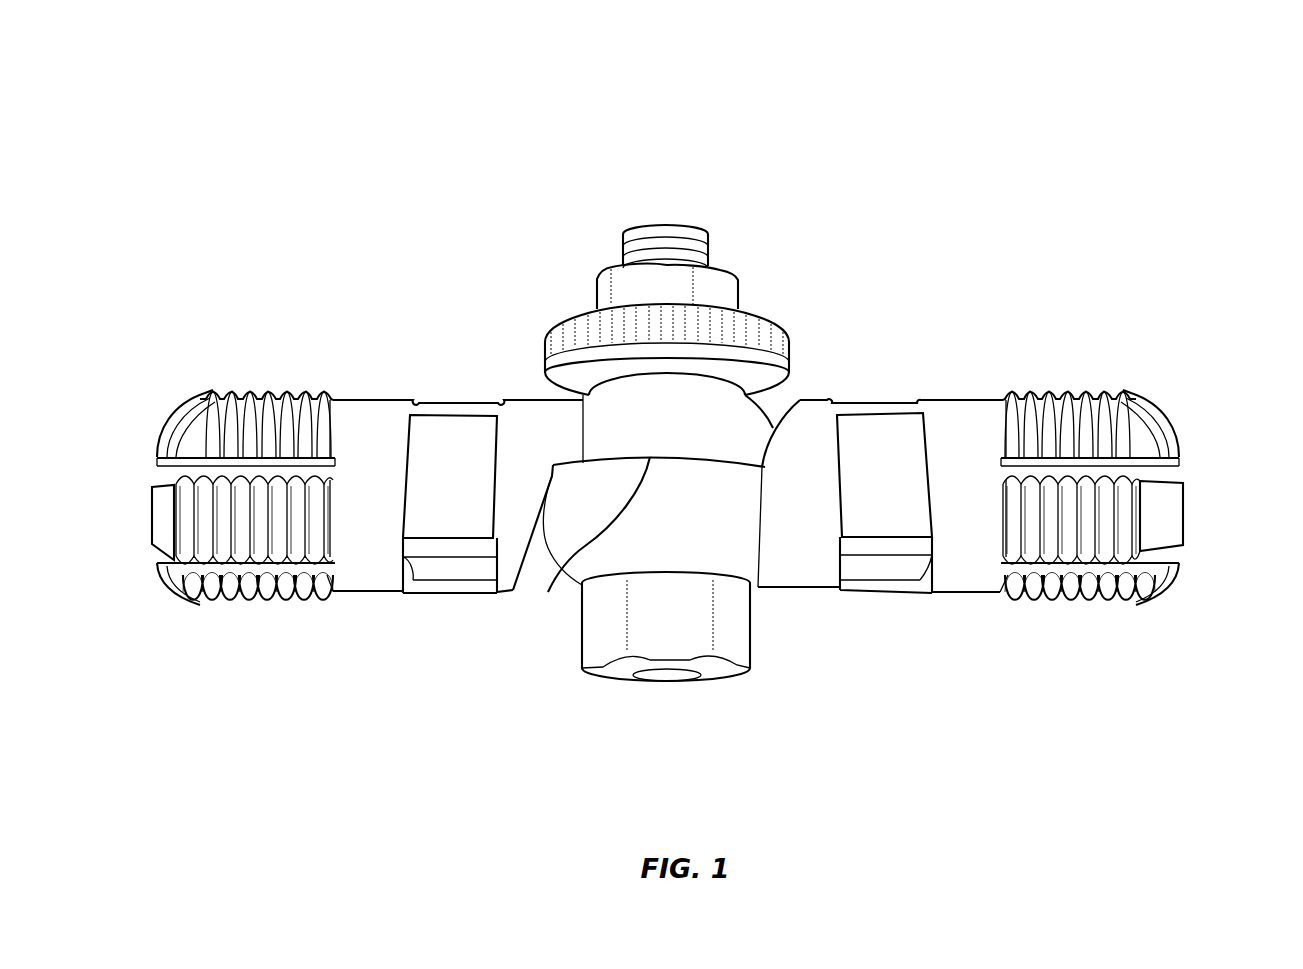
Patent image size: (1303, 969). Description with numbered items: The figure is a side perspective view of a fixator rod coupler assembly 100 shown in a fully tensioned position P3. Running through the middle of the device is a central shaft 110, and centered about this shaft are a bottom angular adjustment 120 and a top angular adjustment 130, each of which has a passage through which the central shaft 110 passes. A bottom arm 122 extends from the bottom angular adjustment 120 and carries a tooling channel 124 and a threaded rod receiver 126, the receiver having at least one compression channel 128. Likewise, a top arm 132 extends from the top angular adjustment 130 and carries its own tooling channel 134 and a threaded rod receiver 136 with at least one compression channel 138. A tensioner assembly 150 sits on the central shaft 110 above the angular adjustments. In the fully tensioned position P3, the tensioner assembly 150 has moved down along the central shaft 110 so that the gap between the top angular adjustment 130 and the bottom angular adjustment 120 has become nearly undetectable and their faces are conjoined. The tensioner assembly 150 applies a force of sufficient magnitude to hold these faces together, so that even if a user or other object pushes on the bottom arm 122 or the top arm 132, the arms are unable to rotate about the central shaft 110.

The fixator rod coupler assembly 100 is at (982, 147).
The central shaft 110 is at (662, 222).
The bottom angular adjustment 120 is at (745, 560).
The bottom arm 122 is at (958, 547).
The tooling channel of the bottom arm 124 is at (880, 442).
The threaded rod receiver of the bottom arm 126 is at (1158, 428).
The compression channel 128 is at (1083, 470).
The top angular adjustment 130 is at (600, 427).
The top arm 132 is at (373, 437).
The tooling channel of the top arm 134 is at (437, 525).
The threaded rod receiver of the top arm 136 is at (165, 540).
The compression channel 138 is at (222, 470).
The tensioner assembly 150 is at (572, 300).
The fully tensioned position P3 is at (548, 592).